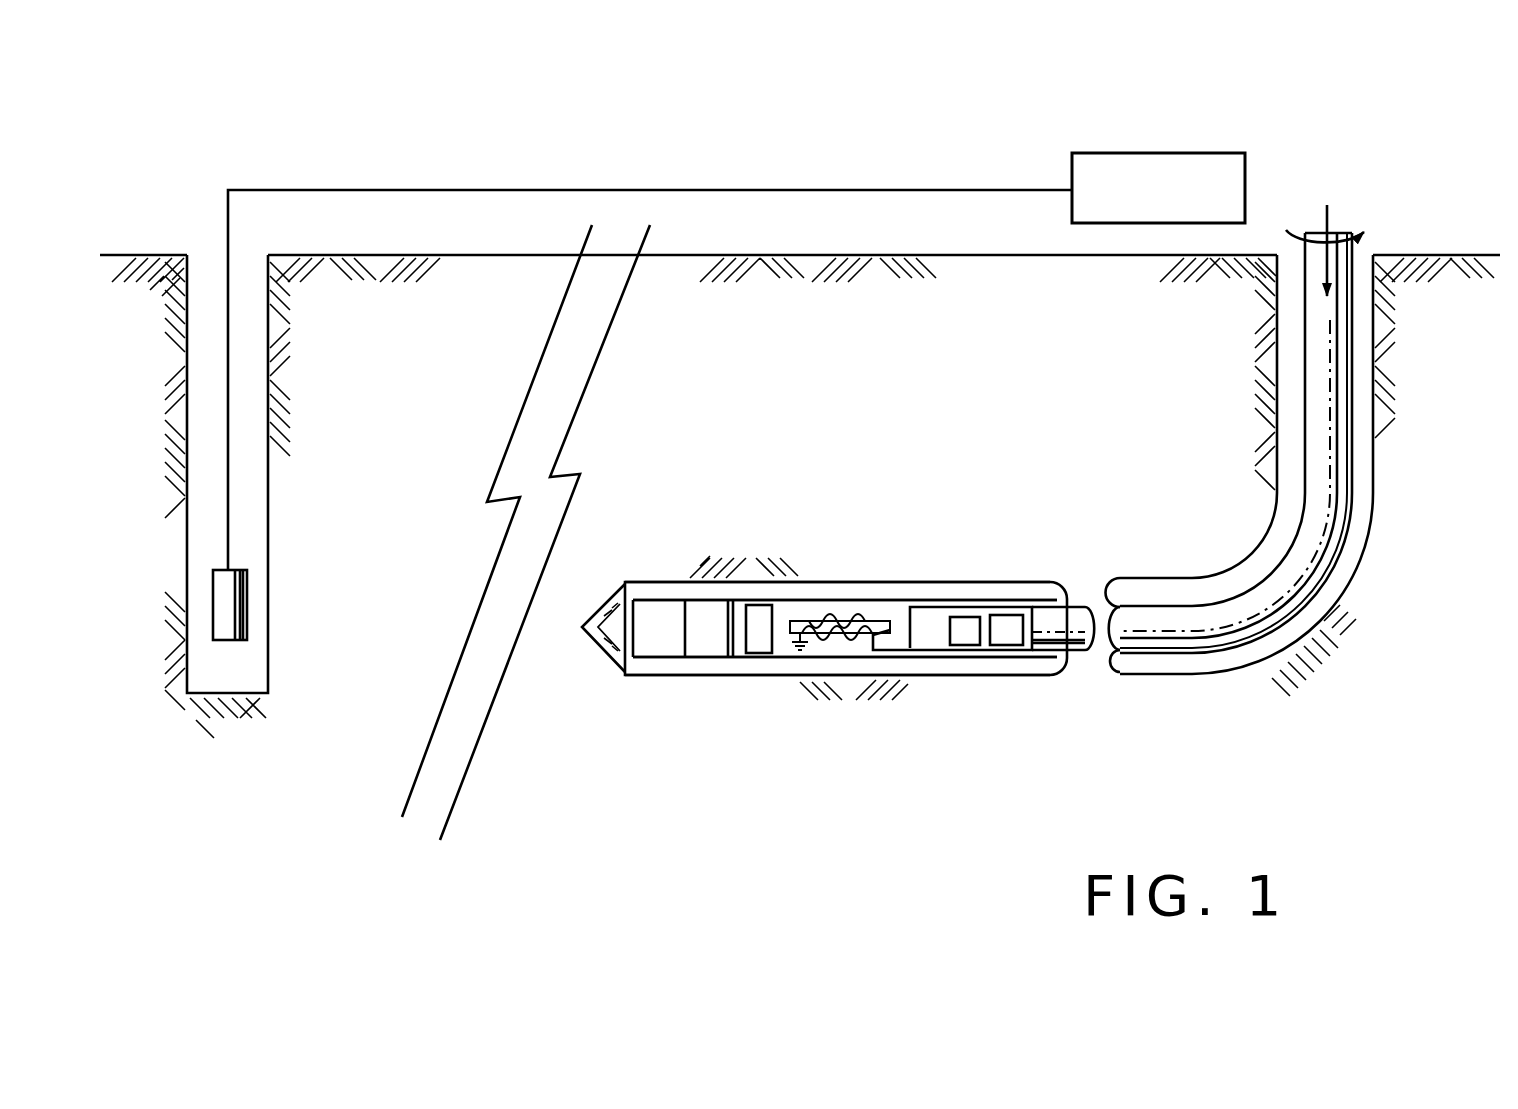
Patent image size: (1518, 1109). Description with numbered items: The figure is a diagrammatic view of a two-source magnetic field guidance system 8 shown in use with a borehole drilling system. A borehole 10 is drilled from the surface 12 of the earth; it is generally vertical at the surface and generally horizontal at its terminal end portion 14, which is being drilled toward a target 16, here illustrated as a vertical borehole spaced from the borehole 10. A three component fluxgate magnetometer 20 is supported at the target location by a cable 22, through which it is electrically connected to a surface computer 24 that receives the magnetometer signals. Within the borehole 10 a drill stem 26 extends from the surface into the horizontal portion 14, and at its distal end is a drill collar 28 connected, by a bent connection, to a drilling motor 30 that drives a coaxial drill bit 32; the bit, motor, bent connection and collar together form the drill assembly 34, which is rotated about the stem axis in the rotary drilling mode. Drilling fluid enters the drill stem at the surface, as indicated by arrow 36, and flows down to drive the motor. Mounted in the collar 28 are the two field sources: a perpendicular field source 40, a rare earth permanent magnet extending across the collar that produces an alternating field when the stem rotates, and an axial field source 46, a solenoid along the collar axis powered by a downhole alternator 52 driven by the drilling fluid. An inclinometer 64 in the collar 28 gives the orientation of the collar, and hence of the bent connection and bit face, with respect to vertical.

The two-source guidance system 8 is at (811, 673).
The borehole 10 is at (1273, 490).
The surface of the earth 12 is at (979, 245).
The terminal end portion of the borehole 14 is at (932, 678).
The target 16 is at (272, 575).
The three component fluxgate magnetometer 20 is at (247, 620).
The cable 22 is at (232, 513).
The surface computer 24 is at (1150, 150).
The drill stem 26 is at (1358, 521).
The drill collar 28 is at (752, 660).
The drilling motor 30 is at (655, 660).
The drill bit 32 is at (597, 630).
The drill assembly 34 is at (628, 572).
The drilling fluid flow arrow 36 is at (1322, 212).
The perpendicular field source 40 is at (738, 632).
The axial field source 46 is at (880, 612).
The downhole alternator 52 is at (1013, 627).
The inclinometer 64 is at (965, 640).